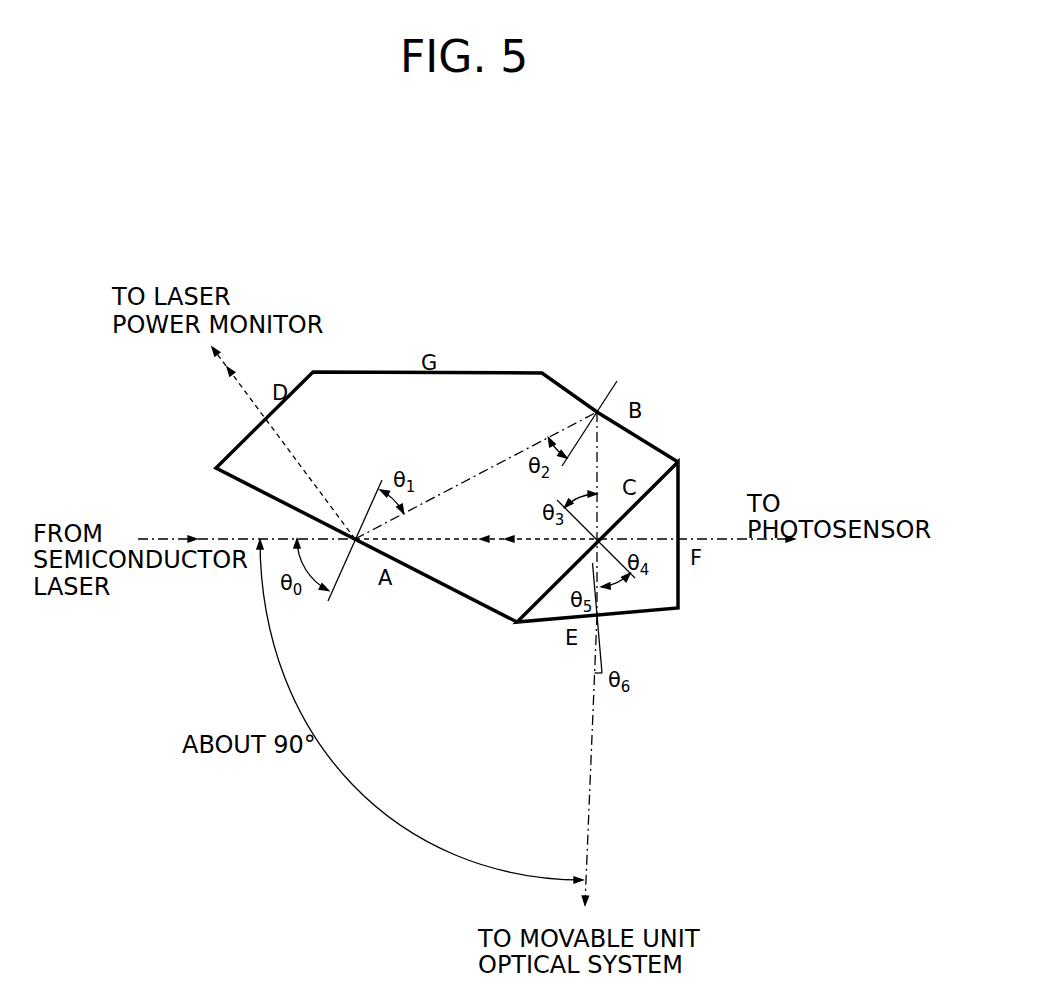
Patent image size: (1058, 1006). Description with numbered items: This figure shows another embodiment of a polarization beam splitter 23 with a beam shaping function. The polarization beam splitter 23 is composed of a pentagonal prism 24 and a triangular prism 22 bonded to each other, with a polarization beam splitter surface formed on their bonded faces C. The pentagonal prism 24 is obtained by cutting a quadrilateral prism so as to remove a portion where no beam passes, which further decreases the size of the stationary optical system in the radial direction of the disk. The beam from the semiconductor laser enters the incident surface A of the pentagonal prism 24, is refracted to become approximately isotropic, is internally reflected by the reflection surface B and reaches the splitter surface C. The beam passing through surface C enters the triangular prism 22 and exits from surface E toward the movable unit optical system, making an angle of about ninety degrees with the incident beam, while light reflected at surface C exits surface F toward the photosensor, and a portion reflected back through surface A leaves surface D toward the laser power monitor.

The triangular prism 22 is at (678, 492).
The polarization beam splitter 23 is at (563, 365).
The pentagonal prism 24 is at (460, 372).